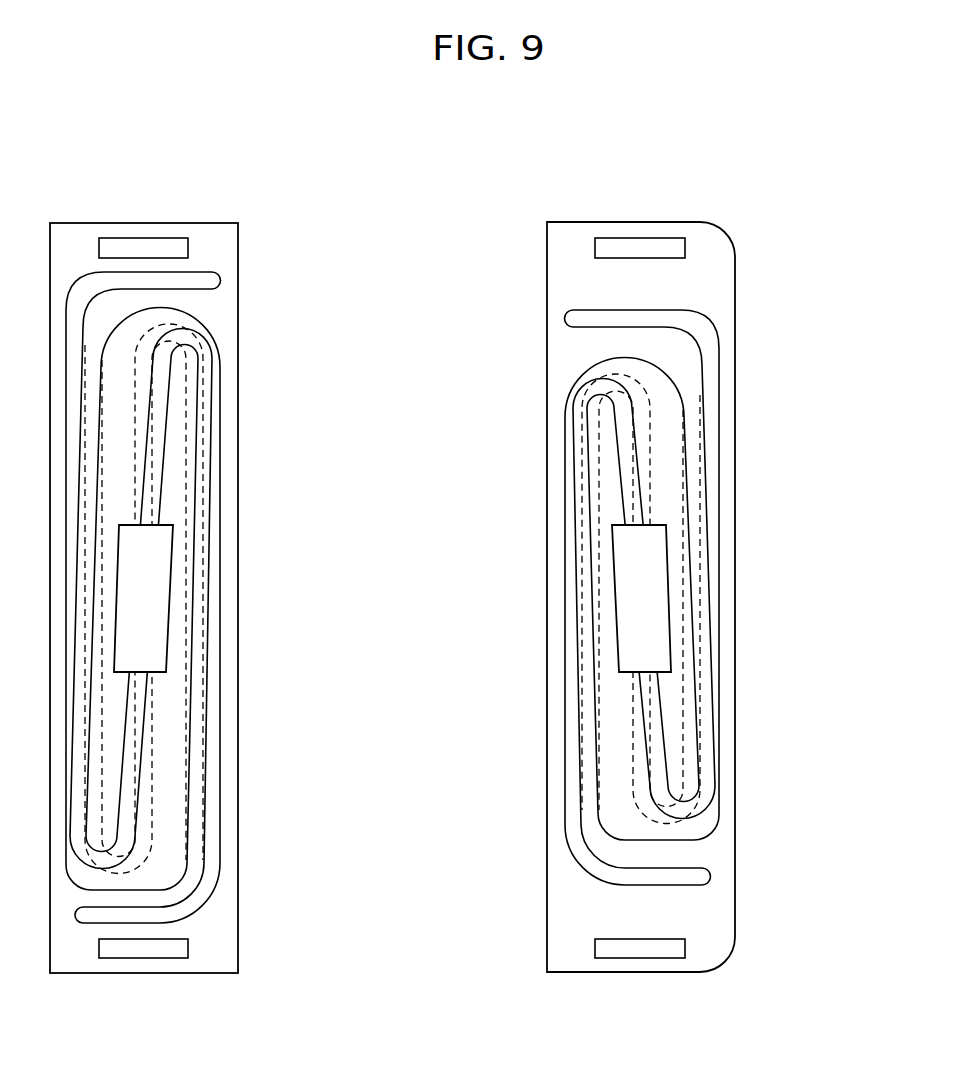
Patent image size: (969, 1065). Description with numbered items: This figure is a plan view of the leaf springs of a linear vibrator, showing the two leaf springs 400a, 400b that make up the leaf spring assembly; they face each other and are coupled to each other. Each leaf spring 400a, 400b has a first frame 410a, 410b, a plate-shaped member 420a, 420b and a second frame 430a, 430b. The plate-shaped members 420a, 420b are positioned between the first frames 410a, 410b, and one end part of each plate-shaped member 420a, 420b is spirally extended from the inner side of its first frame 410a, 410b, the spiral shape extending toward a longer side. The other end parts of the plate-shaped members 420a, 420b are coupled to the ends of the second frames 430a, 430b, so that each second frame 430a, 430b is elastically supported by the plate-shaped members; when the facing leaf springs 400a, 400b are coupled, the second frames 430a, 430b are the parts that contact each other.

The leaf spring 400a is at (268, 197).
The first frame 410a is at (222, 262).
The plate-shaped member 420a is at (208, 455).
The second frame 430a is at (155, 573).
The leaf spring 400b is at (767, 197).
The first frame 410b is at (718, 260).
The plate-shaped member 420b is at (695, 443).
The second frame 430b is at (650, 578).